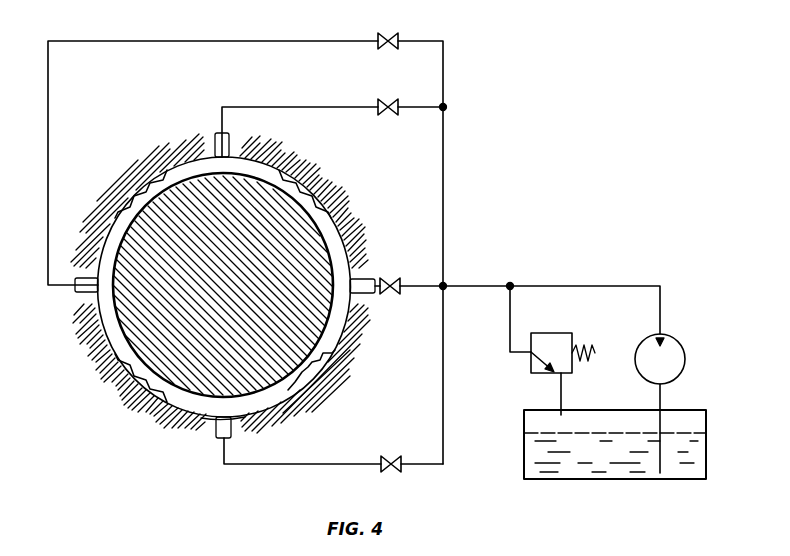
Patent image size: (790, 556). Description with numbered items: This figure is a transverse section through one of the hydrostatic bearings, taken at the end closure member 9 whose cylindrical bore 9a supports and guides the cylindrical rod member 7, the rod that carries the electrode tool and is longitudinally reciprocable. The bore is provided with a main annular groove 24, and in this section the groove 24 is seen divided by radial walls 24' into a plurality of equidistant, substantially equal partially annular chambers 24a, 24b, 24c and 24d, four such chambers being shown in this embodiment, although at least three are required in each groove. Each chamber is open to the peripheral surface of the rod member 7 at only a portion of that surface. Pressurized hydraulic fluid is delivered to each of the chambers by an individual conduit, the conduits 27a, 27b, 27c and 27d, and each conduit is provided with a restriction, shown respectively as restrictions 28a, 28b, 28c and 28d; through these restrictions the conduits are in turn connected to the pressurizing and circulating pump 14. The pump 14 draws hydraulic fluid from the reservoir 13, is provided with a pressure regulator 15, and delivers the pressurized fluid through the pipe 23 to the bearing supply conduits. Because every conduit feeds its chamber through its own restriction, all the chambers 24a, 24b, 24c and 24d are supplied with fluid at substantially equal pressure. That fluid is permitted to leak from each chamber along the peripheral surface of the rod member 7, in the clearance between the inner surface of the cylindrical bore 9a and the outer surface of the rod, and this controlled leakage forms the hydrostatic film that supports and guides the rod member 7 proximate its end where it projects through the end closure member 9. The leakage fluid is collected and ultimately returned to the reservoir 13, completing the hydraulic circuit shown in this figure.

The cylindrical rod member 7 is at (320, 252).
The end closure member 9 is at (165, 411).
The cylindrical bore 9a is at (201, 419).
The main annular groove 24 is at (137, 196).
The radial walls 24' is at (131, 192).
The partially annular chamber 24a is at (108, 332).
The partially annular chamber 24b is at (257, 166).
The partially annular chamber 24c is at (337, 334).
The partially annular chamber 24d is at (273, 404).
The conduit 27a is at (220, 42).
The conduit 27b is at (336, 106).
The conduit 27c is at (375, 280).
The conduit 27d is at (290, 466).
The restriction 28a is at (378, 45).
The restriction 28b is at (380, 112).
The restriction 28c is at (392, 280).
The restriction 28d is at (392, 458).
The pipe 23 is at (478, 285).
The pressure regulator 15 is at (549, 333).
The pressurizing and circulating pump 14 is at (669, 338).
The reservoir 13 is at (535, 456).